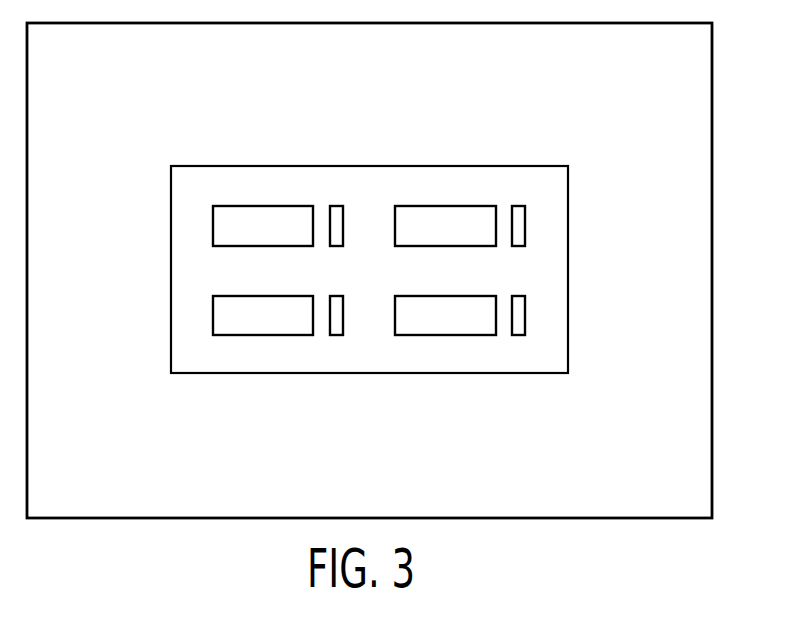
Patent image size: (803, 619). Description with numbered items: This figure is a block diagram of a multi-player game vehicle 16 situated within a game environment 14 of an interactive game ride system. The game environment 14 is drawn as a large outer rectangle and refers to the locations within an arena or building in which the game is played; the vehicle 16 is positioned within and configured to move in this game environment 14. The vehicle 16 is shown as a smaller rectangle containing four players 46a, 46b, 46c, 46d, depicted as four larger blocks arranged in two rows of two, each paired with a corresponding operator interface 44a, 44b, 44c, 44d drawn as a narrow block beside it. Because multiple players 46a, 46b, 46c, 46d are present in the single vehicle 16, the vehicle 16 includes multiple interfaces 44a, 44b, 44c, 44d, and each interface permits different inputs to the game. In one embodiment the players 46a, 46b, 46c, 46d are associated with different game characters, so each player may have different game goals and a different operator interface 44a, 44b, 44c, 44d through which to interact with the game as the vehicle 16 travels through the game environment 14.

The game environment 14 is at (712, 270).
The game vehicle 16 is at (269, 165).
The operator interface 44a is at (337, 206).
The operator interface 44b is at (337, 335).
The operator interface 44c is at (526, 316).
The operator interface 44d is at (526, 226).
The player 46a is at (213, 224).
The player 46b is at (213, 314).
The player 46c is at (447, 335).
The player 46d is at (447, 206).